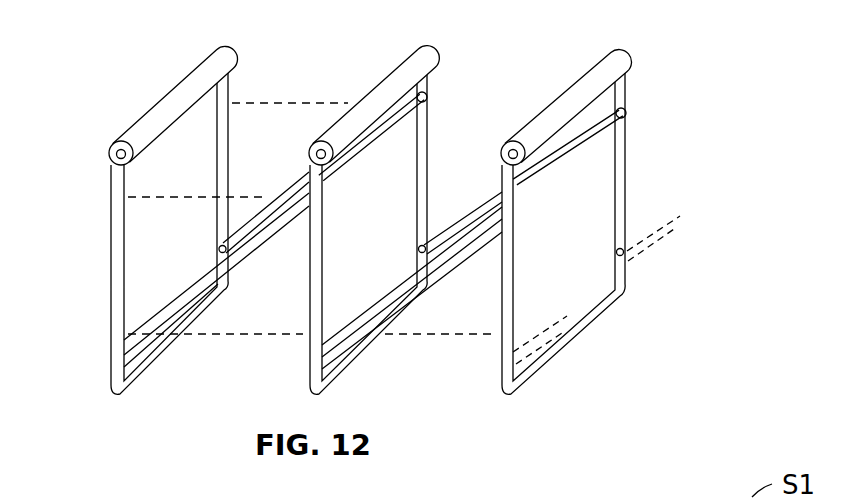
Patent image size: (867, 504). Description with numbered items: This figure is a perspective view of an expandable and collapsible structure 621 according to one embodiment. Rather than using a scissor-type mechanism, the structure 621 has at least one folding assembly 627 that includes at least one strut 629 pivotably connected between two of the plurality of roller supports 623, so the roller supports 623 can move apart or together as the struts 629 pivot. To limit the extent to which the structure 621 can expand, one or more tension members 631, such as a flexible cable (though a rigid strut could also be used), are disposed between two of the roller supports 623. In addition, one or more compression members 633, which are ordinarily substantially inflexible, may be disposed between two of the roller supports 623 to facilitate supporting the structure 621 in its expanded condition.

The expandable and collapsible structure 621 is at (408, 211).
The roller supports 623 is at (110, 248).
The folding assembly 627 is at (276, 252).
The strut 629 is at (252, 258).
The tension member 631 is at (200, 338).
The compression member 633 is at (284, 100).